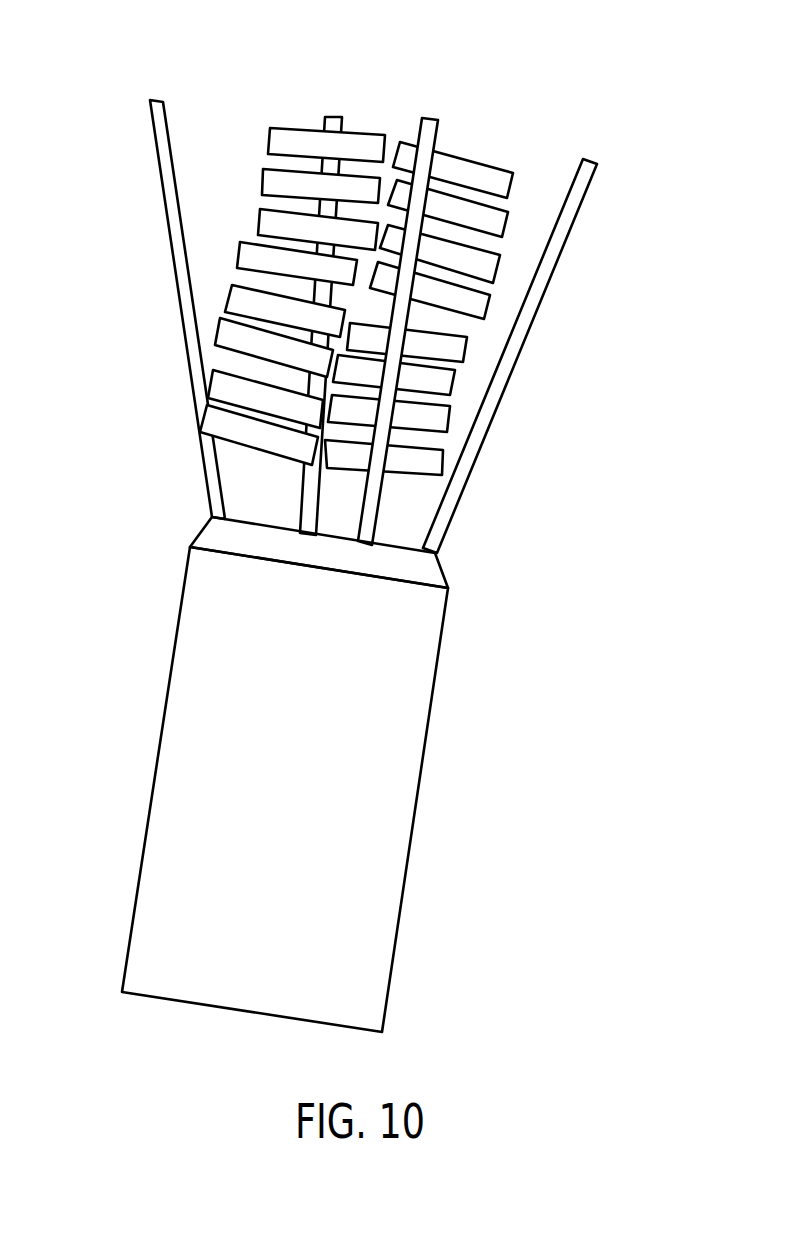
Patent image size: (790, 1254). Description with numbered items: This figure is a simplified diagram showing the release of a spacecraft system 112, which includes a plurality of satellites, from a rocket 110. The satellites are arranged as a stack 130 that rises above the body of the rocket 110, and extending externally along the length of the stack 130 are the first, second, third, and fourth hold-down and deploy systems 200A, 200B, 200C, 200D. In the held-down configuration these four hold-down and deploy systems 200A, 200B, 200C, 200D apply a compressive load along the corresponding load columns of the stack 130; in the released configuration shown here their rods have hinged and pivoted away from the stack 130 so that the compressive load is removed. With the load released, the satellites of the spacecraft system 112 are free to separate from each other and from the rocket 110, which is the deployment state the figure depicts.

The rocket 110 is at (395, 808).
The spacecraft system 112 is at (530, 373).
The stack 130 is at (476, 133).
The first hold-down and deploy system 200A is at (333, 118).
The second hold-down and deploy system 200B is at (434, 118).
The third hold-down and deploy system 200C is at (163, 152).
The fourth hold-down and deploy system 200D is at (580, 180).